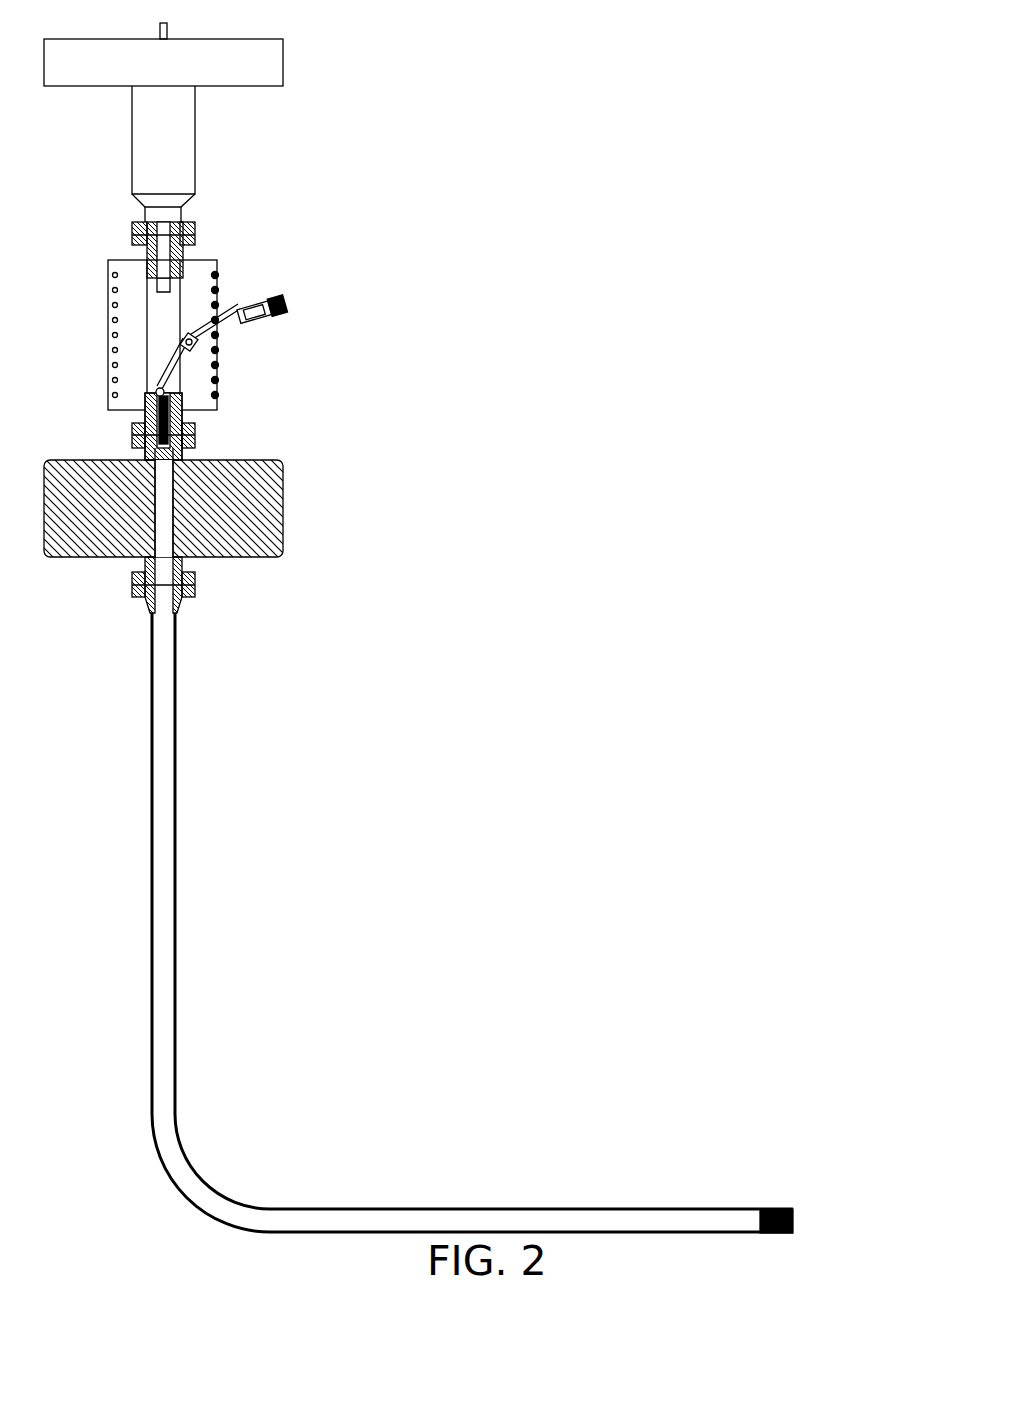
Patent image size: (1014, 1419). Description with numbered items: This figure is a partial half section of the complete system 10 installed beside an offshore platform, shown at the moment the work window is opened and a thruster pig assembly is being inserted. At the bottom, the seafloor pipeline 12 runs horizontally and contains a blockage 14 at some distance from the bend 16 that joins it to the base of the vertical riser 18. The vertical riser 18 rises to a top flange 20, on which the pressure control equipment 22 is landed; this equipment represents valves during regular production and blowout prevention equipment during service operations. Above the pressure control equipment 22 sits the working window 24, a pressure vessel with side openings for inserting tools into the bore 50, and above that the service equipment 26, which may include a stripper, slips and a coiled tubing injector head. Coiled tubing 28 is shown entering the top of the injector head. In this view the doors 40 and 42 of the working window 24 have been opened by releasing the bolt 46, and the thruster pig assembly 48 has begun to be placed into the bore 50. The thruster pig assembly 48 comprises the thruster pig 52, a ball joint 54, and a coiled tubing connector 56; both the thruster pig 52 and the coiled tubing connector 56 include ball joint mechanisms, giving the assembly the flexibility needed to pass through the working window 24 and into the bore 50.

The complete system 10 is at (432, 777).
The seafloor pipeline 12 is at (390, 1210).
The blockage 14 is at (797, 1222).
The bend 16 is at (197, 1147).
The vertical riser 18 is at (178, 935).
The top flange 20 is at (197, 585).
The pressure control equipment 22 is at (287, 508).
The working window 24 is at (207, 240).
The service equipment 26 is at (203, 162).
The coiled tubing 28 is at (167, 27).
The door 40 is at (218, 388).
The door 42 is at (122, 390).
The bolt 46 is at (218, 367).
The thruster pig assembly 48 is at (262, 298).
The bore 50 is at (168, 468).
The thruster pig 52 is at (218, 412).
The ball joint 54 is at (208, 340).
The coiled tubing connector 56 is at (287, 306).